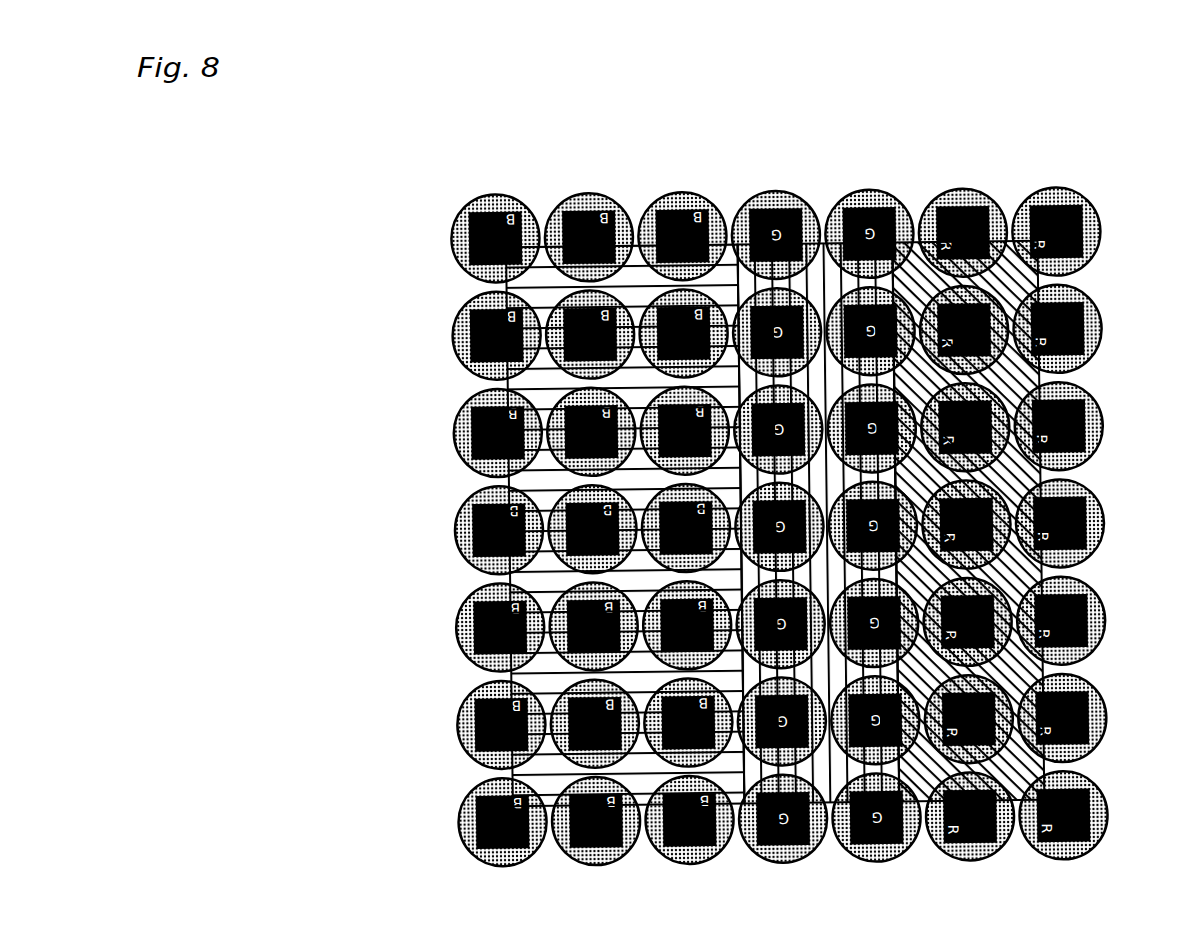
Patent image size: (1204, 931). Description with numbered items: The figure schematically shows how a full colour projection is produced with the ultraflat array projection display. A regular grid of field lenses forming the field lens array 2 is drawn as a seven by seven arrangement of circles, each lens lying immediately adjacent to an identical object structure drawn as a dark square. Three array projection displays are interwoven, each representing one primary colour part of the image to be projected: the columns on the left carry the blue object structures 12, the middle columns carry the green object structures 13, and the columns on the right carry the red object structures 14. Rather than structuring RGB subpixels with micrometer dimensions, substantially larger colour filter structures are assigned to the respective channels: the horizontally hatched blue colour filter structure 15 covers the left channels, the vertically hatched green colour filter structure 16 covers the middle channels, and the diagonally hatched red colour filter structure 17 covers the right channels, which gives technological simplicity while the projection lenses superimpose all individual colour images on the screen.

The field lens array 2 is at (455, 242).
The object structure 12 is at (487, 212).
The object structure 13 is at (763, 212).
The object structure 14 is at (1082, 212).
The colour filter structure 15 is at (552, 290).
The colour filter structure 16 is at (813, 262).
The colour filter structure 17 is at (1033, 287).